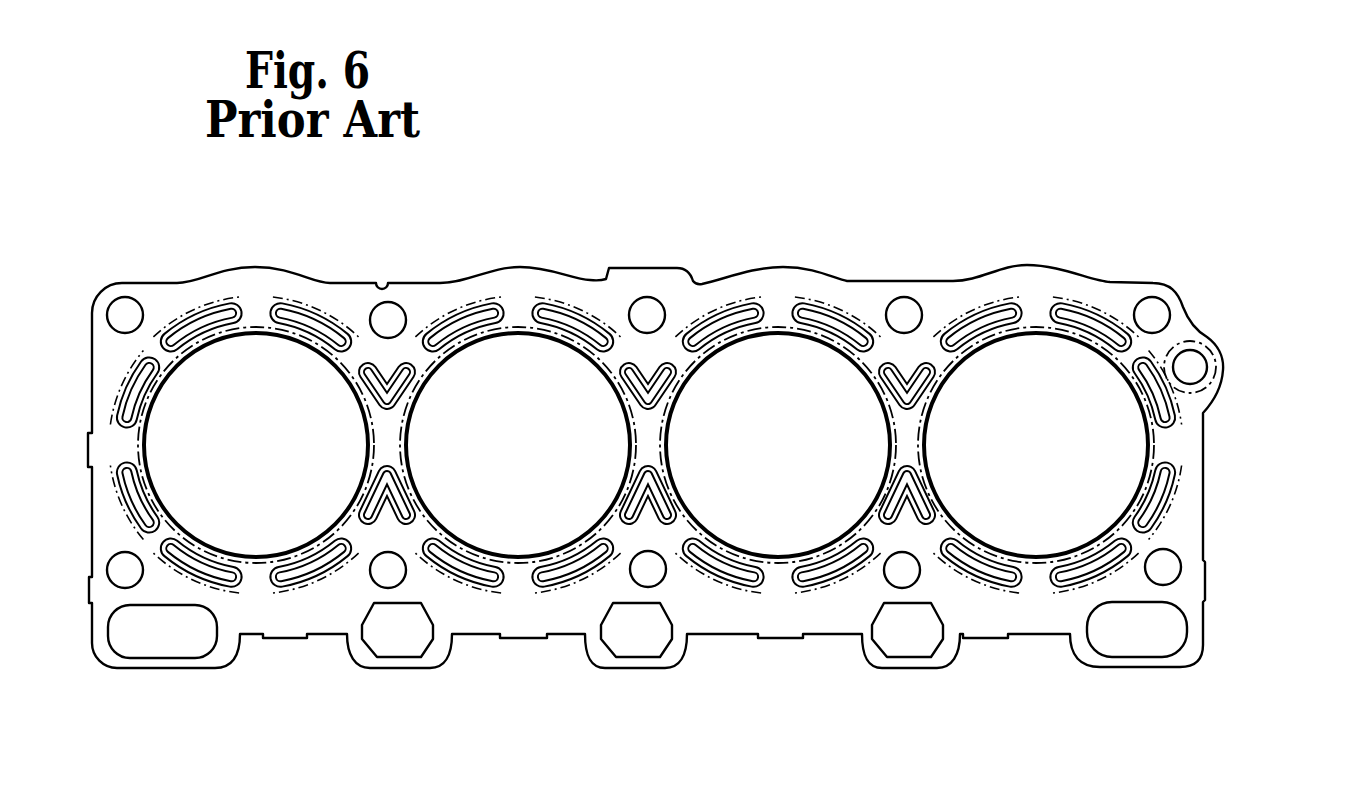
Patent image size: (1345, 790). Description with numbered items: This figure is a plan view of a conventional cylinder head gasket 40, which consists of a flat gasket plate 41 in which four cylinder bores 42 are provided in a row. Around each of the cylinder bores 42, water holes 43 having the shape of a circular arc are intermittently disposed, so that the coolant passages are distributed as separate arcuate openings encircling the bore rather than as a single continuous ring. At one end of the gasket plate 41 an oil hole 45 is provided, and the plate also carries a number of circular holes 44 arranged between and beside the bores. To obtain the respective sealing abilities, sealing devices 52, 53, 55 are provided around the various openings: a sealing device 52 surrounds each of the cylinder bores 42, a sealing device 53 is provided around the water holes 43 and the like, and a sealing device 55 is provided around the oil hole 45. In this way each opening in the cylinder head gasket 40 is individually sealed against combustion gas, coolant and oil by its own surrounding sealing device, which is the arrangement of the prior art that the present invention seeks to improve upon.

The cylinder head gasket 40 is at (676, 256).
The gasket plate 41 is at (528, 290).
The cylinder bore 42 is at (790, 378).
The water hole 43 is at (628, 368).
The bolt hole 44 is at (1162, 318).
The oil hole 45 is at (1193, 373).
The sealing device 52 is at (827, 553).
The sealing device 53 is at (647, 525).
The sealing device 55 is at (1218, 342).